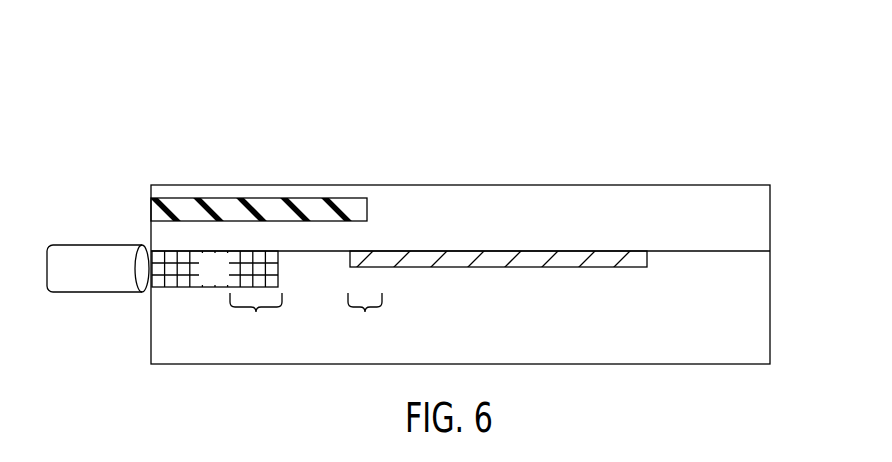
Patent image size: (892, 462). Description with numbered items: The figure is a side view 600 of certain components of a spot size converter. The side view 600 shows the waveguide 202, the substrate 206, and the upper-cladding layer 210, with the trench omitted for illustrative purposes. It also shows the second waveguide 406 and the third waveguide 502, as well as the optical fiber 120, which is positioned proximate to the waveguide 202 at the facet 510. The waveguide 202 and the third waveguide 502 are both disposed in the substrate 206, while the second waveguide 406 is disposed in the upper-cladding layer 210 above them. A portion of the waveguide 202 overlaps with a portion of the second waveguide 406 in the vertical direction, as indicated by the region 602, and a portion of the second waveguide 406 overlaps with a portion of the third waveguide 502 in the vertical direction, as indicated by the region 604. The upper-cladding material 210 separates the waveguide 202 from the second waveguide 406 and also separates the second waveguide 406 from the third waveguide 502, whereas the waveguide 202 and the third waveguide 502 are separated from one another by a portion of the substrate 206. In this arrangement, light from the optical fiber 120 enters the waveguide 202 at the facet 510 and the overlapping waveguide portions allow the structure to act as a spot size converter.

The side view 600 is at (664, 106).
The optical fiber 120 is at (67, 257).
The facet 510 is at (150, 265).
The second waveguide 406 is at (265, 203).
The third waveguide 502 is at (533, 256).
The waveguide 202 is at (226, 278).
The upper-cladding layer 210 is at (755, 213).
The substrate 206 is at (755, 354).
The overlap portion between waveguide and second waveguide 602 is at (256, 317).
The overlap portion between second waveguide and third waveguide 604 is at (365, 317).